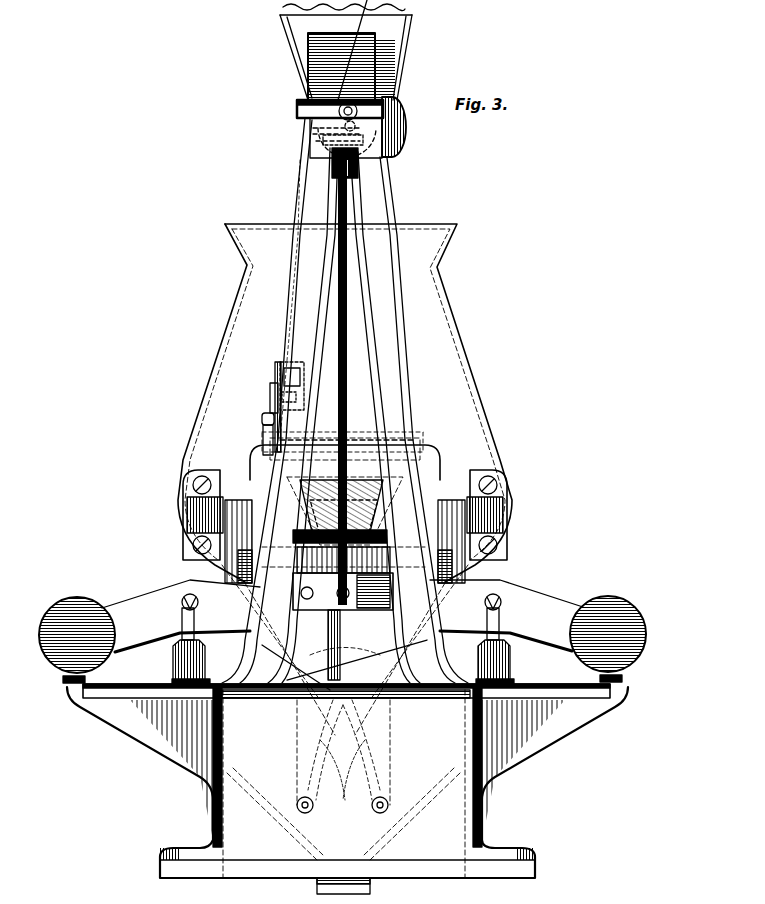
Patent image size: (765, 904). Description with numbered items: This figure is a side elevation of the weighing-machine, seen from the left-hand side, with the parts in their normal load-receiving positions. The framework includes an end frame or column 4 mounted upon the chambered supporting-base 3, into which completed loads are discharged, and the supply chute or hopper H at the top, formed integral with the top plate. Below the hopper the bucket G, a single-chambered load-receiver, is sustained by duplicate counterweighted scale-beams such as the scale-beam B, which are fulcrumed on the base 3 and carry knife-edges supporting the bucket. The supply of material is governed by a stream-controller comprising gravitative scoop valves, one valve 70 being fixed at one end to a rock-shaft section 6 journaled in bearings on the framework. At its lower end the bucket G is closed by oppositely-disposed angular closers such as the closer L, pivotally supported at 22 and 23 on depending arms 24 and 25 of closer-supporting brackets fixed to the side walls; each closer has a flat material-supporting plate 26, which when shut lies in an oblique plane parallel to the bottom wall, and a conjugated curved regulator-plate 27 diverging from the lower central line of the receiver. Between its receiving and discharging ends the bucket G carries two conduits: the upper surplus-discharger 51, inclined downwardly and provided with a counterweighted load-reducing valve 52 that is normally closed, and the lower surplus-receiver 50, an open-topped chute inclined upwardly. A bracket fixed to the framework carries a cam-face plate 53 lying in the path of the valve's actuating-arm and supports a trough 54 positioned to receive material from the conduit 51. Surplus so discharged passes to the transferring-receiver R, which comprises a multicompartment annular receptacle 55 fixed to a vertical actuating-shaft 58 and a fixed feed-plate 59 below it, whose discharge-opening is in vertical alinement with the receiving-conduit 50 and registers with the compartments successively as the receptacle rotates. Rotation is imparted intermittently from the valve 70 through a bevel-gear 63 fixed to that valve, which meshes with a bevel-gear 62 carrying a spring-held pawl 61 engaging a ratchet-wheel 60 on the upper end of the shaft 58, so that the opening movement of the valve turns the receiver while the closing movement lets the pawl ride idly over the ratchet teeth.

The supply chute or hopper H is at (297, 40).
The bevel-gear 63 is at (337, 115).
The rock-shaft section 6 is at (352, 108).
The gravitative scoop valve 70 is at (403, 113).
The spring-held pawl 61 is at (377, 140).
The bevel-gear 62 is at (330, 132).
The ratchet-wheel 60 is at (333, 142).
The end frame or column 4 is at (377, 262).
The actuating-shaft 58 is at (340, 308).
The bucket G is at (245, 315).
The counterweighted valve 52 is at (292, 363).
The surplus-discharger 51 is at (298, 362).
The cam or cam-face plate 53 is at (262, 427).
The trough 54 is at (313, 427).
The transferring-receiver R is at (344, 495).
The multicompartment annular receptacle 55 is at (373, 490).
The feed-plate 59 is at (290, 567).
The surplus-receiver 50 is at (380, 603).
The counterweighted scale-beam B is at (560, 606).
The material-supporting plate 26 is at (335, 658).
The angular closer L is at (386, 703).
The depending arm 25 is at (297, 747).
The depending arm 24 is at (387, 763).
The closer pivot 22 is at (388, 803).
The closer pivot 23 is at (300, 810).
The curved regulator-plate 27 is at (360, 793).
The chambered supporting-base 3 is at (233, 803).